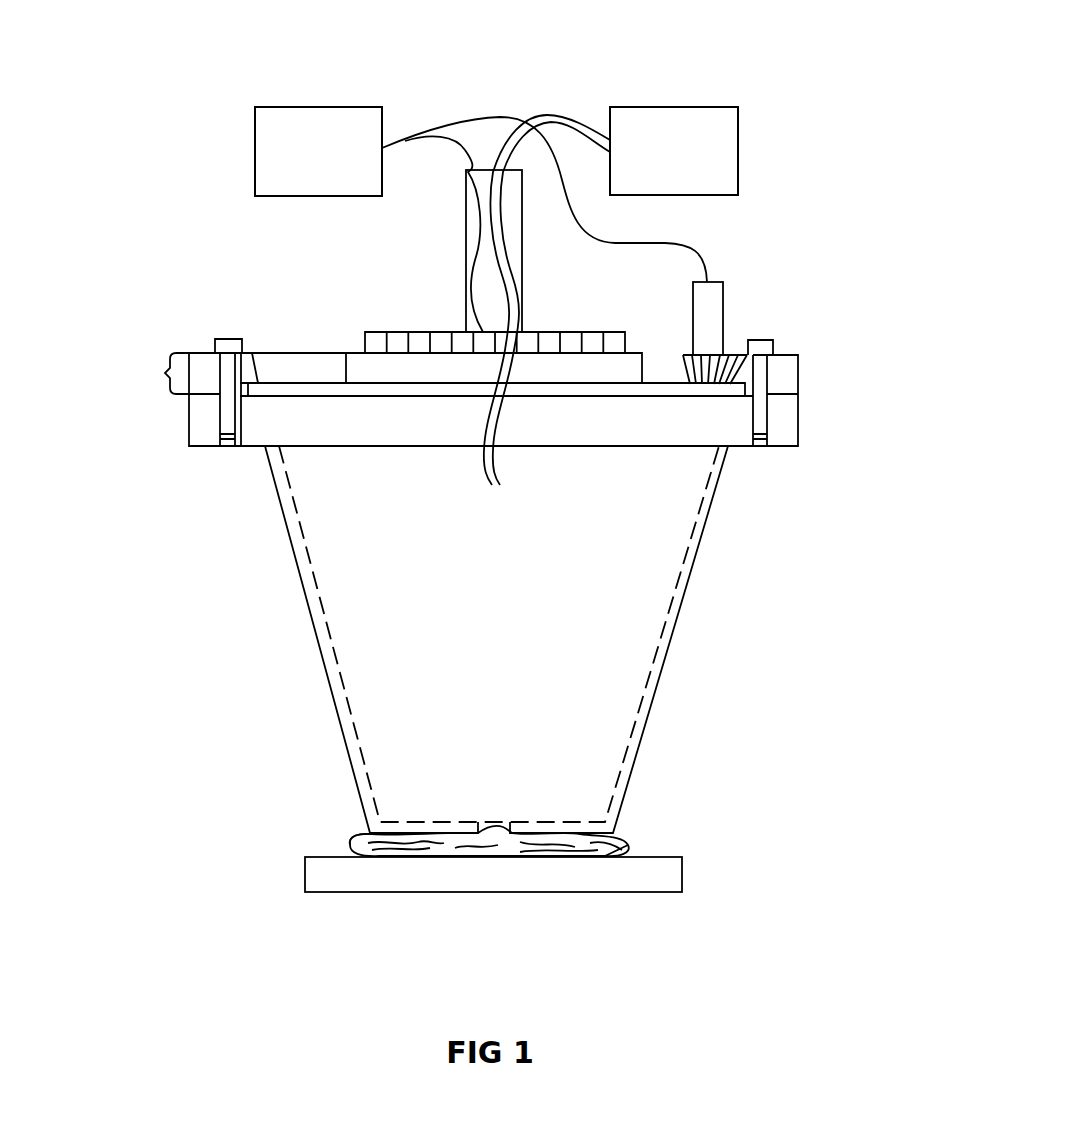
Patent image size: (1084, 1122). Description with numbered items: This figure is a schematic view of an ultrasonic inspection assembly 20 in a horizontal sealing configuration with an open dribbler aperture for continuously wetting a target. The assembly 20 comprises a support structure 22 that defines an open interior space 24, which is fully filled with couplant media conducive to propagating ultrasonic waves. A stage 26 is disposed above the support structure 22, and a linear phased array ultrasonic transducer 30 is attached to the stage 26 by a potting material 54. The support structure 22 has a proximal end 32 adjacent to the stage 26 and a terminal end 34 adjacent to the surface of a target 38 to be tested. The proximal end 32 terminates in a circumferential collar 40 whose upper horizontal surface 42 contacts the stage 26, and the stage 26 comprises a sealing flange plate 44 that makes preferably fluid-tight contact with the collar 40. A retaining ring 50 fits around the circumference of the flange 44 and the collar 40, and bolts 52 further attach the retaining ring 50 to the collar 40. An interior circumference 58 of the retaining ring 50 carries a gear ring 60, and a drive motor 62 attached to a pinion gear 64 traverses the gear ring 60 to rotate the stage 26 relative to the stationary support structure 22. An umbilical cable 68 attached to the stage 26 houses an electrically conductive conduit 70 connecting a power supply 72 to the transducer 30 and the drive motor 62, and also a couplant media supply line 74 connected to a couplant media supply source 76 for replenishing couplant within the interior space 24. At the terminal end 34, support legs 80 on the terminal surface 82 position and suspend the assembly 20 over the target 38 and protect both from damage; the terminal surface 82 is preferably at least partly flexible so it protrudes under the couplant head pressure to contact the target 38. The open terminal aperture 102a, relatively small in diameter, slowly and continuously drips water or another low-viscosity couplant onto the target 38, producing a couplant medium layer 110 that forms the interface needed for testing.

The ultrasonic inspection assembly 20 is at (757, 211).
The support structure 22 is at (688, 572).
The interior space 24 is at (600, 667).
The stage 26 is at (160, 372).
The linear phased array ultrasonic transducer 30 is at (417, 333).
The proximal end 32 is at (186, 426).
The terminal end 34 is at (362, 815).
The target 38 is at (640, 860).
The collar 40 is at (207, 435).
The upper horizontal surface 42 is at (282, 396).
The sealing flange plate 44 is at (280, 352).
The retaining ring 50 is at (792, 371).
The bolts 52 is at (767, 345).
The potting material 54 is at (328, 383).
The interior circumference 58 is at (268, 366).
The gear ring 60 is at (744, 364).
The drive motor 62 is at (717, 302).
The pinion gear 64 is at (688, 367).
The umbilical cable 68 is at (473, 247).
The electrically conductive conduit 70 is at (480, 117).
The power supply 72 is at (294, 115).
The couplant media supply line 74 is at (557, 122).
The couplant media supply source 76 is at (694, 110).
The support legs 80 is at (388, 855).
The terminal surface 82 is at (620, 843).
The terminal aperture 102a is at (482, 832).
The couplant medium layer 110 is at (353, 839).